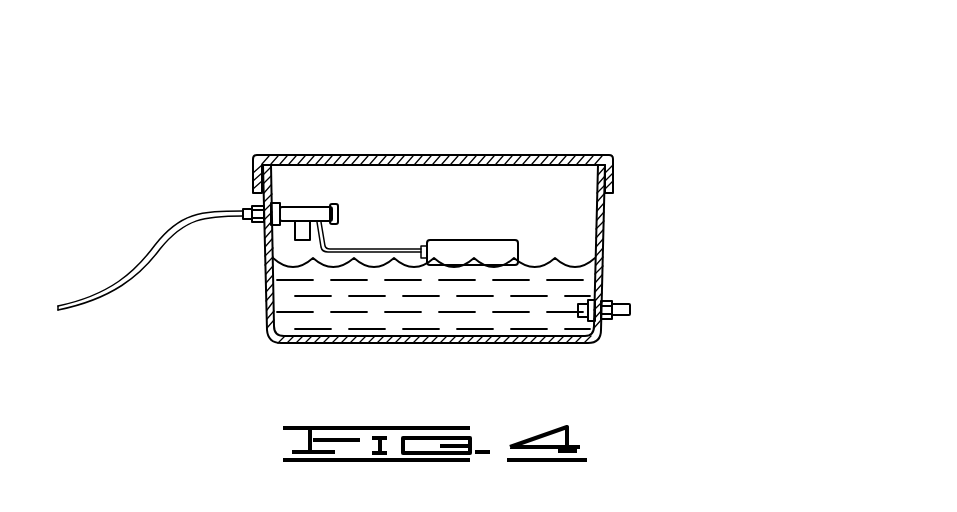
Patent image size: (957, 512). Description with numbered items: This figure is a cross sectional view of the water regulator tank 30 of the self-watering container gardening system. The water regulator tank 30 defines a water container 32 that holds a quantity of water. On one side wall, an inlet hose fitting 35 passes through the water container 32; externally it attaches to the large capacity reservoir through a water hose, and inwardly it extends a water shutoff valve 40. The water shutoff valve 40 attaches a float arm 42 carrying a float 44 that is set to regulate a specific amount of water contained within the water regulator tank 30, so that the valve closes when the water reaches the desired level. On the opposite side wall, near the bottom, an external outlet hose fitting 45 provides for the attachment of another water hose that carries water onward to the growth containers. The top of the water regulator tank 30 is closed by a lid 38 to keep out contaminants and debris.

The water regulator tank 30 is at (700, 63).
The water container 32 is at (608, 214).
The inlet hose fitting 35 is at (257, 226).
The lid 38 is at (290, 156).
The water shutoff valve 40 is at (324, 205).
The float arm 42 is at (374, 250).
The heating element 44 is at (500, 240).
The external outlet hose fitting 45 is at (616, 298).